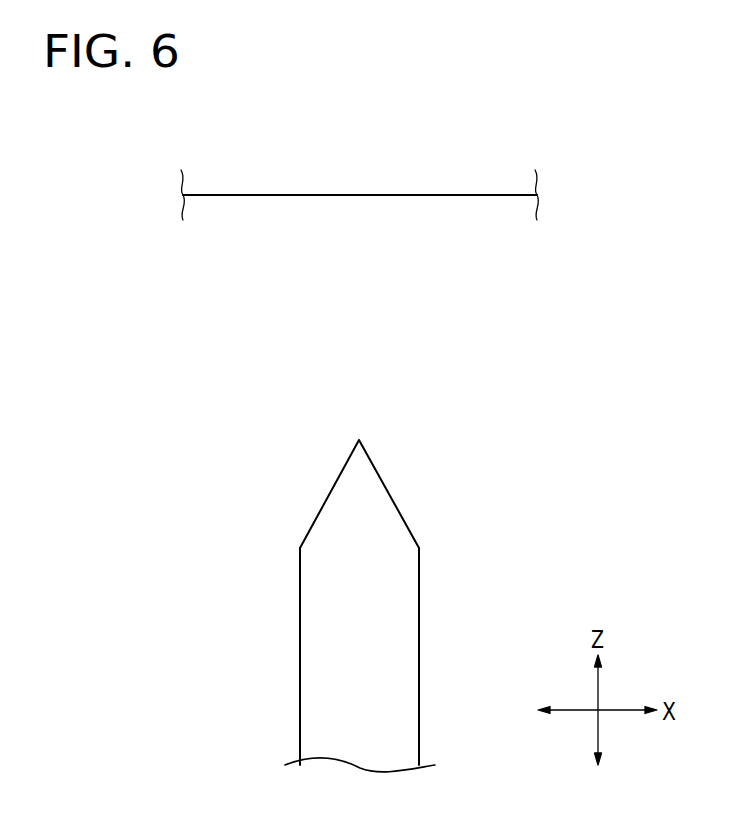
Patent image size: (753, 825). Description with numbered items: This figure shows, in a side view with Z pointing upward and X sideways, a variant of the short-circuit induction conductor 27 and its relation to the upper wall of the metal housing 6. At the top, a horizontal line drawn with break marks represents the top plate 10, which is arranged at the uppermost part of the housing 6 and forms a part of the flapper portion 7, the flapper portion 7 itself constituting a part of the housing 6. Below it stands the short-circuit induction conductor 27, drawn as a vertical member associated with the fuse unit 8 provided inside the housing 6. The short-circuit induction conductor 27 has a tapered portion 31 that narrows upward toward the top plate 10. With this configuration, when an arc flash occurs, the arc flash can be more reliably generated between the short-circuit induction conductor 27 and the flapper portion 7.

The housing 6 is at (360, 161).
The flapper portion 7 is at (360, 151).
The fuse unit 8 is at (424, 606).
The top plate 10 is at (419, 195).
The short-circuit induction conductor 27 is at (419, 651).
The tapered portion 31 is at (383, 505).